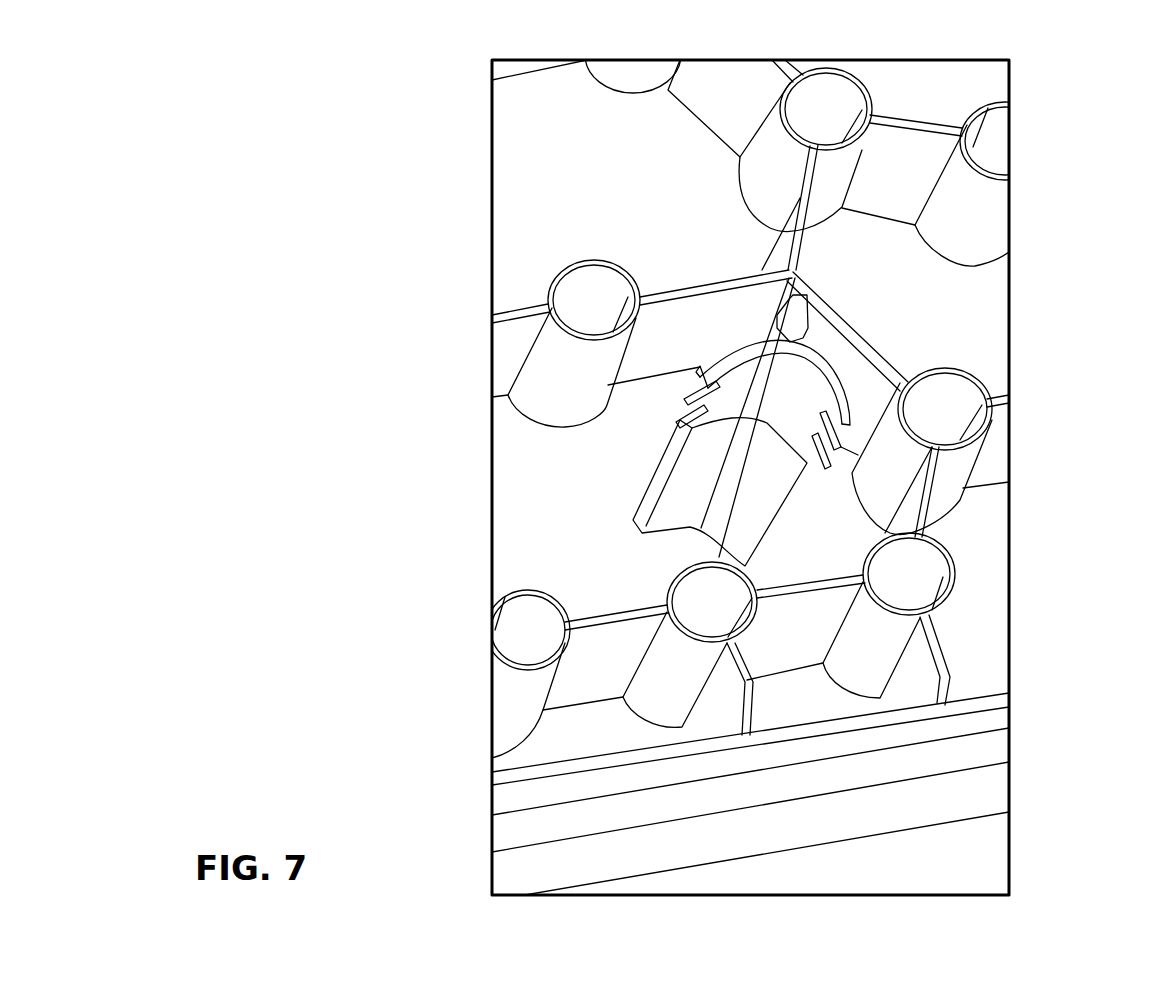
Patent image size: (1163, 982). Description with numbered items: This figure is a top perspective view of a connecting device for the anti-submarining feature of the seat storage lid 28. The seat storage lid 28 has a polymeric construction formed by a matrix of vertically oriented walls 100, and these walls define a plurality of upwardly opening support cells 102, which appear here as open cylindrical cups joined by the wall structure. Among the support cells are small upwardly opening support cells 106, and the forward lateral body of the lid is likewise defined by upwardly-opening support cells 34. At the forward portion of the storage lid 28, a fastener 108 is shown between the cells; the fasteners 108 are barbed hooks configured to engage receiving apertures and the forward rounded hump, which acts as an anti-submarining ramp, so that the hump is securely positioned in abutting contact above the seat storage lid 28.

The seat storage lid 28 is at (637, 155).
The upwardly-opening support cells 34 is at (727, 101).
The vertically oriented walls 100 is at (903, 176).
The upwardly opening support cells 102 is at (573, 223).
The small upwardly opening support cells 106 is at (830, 93).
The fasteners 108 is at (747, 442).